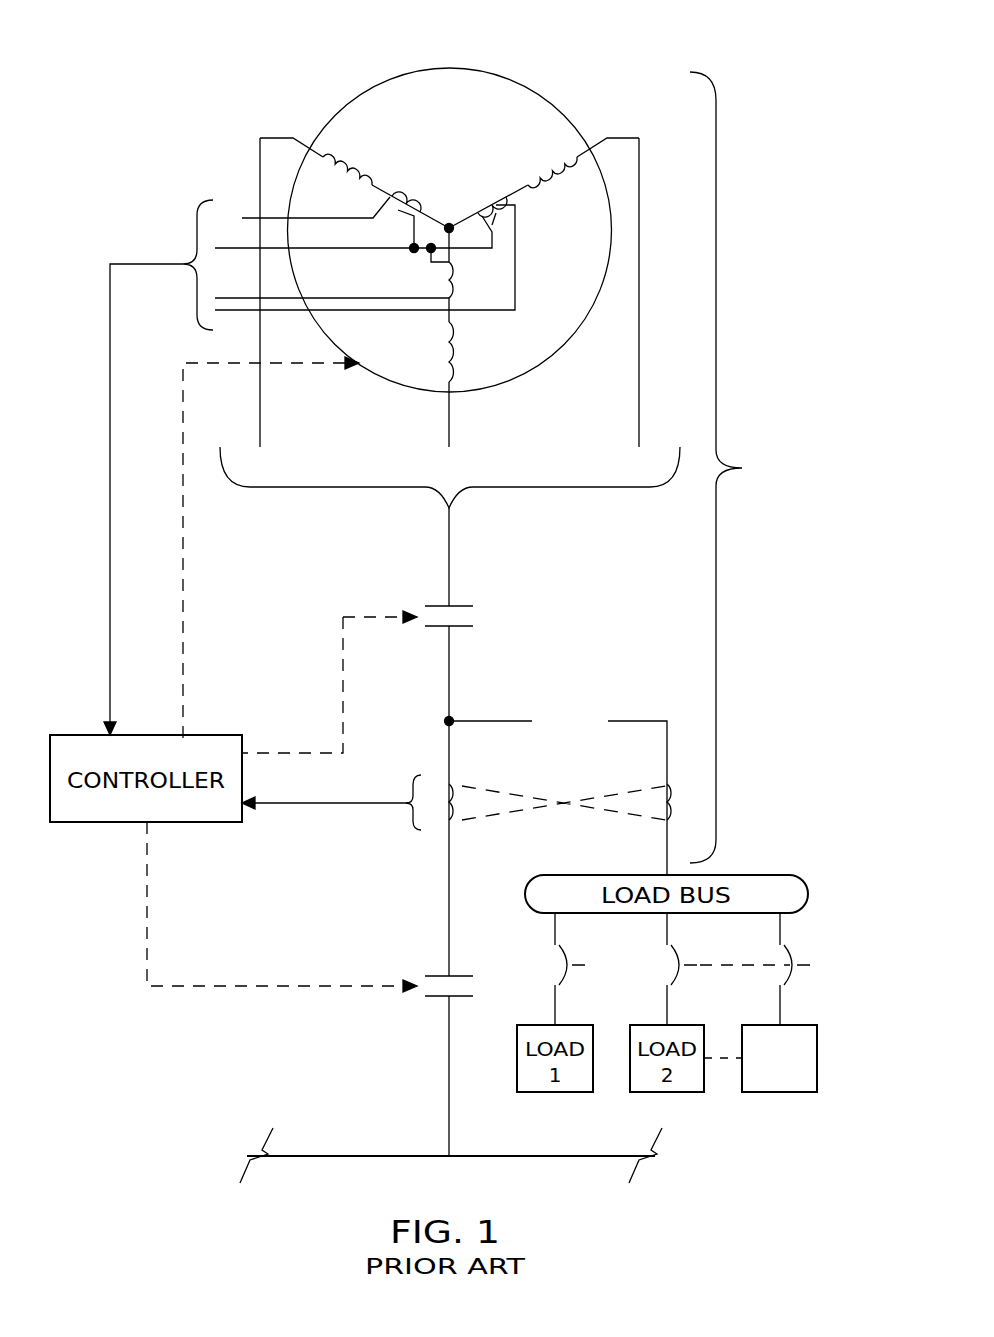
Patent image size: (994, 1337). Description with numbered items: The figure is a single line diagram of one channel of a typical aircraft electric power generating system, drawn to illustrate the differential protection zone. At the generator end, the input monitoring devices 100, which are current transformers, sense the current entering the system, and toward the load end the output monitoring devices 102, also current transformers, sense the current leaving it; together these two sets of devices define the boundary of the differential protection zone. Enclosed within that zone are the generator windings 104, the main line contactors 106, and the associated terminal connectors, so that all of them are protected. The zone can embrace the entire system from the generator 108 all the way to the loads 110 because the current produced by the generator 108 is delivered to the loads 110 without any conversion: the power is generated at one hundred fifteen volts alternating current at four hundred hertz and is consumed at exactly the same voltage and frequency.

The input monitoring devices 100 is at (413, 214).
The output monitoring devices 102 is at (676, 785).
The generator windings 104 is at (342, 168).
The main line contactors 106 is at (457, 606).
The generator 108 is at (568, 82).
The loads 110 is at (807, 1025).